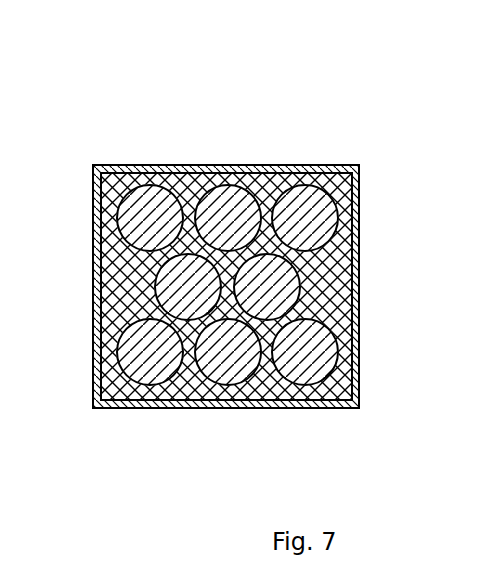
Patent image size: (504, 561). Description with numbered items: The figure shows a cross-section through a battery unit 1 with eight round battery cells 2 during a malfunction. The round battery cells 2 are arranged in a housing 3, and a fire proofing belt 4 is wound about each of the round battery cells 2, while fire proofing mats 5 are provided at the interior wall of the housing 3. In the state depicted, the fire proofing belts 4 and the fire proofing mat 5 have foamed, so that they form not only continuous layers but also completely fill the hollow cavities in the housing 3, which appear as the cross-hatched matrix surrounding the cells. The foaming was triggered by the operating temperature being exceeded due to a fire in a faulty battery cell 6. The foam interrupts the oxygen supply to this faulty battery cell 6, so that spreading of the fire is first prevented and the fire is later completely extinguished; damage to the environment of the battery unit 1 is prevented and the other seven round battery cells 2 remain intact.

The battery unit 1 is at (386, 151).
The round battery cells 2 is at (158, 185).
The housing 3 is at (105, 167).
The fire proofing belt 4 is at (140, 170).
The fire proofing mat 5 is at (108, 190).
The faulty battery cell 6 is at (182, 287).